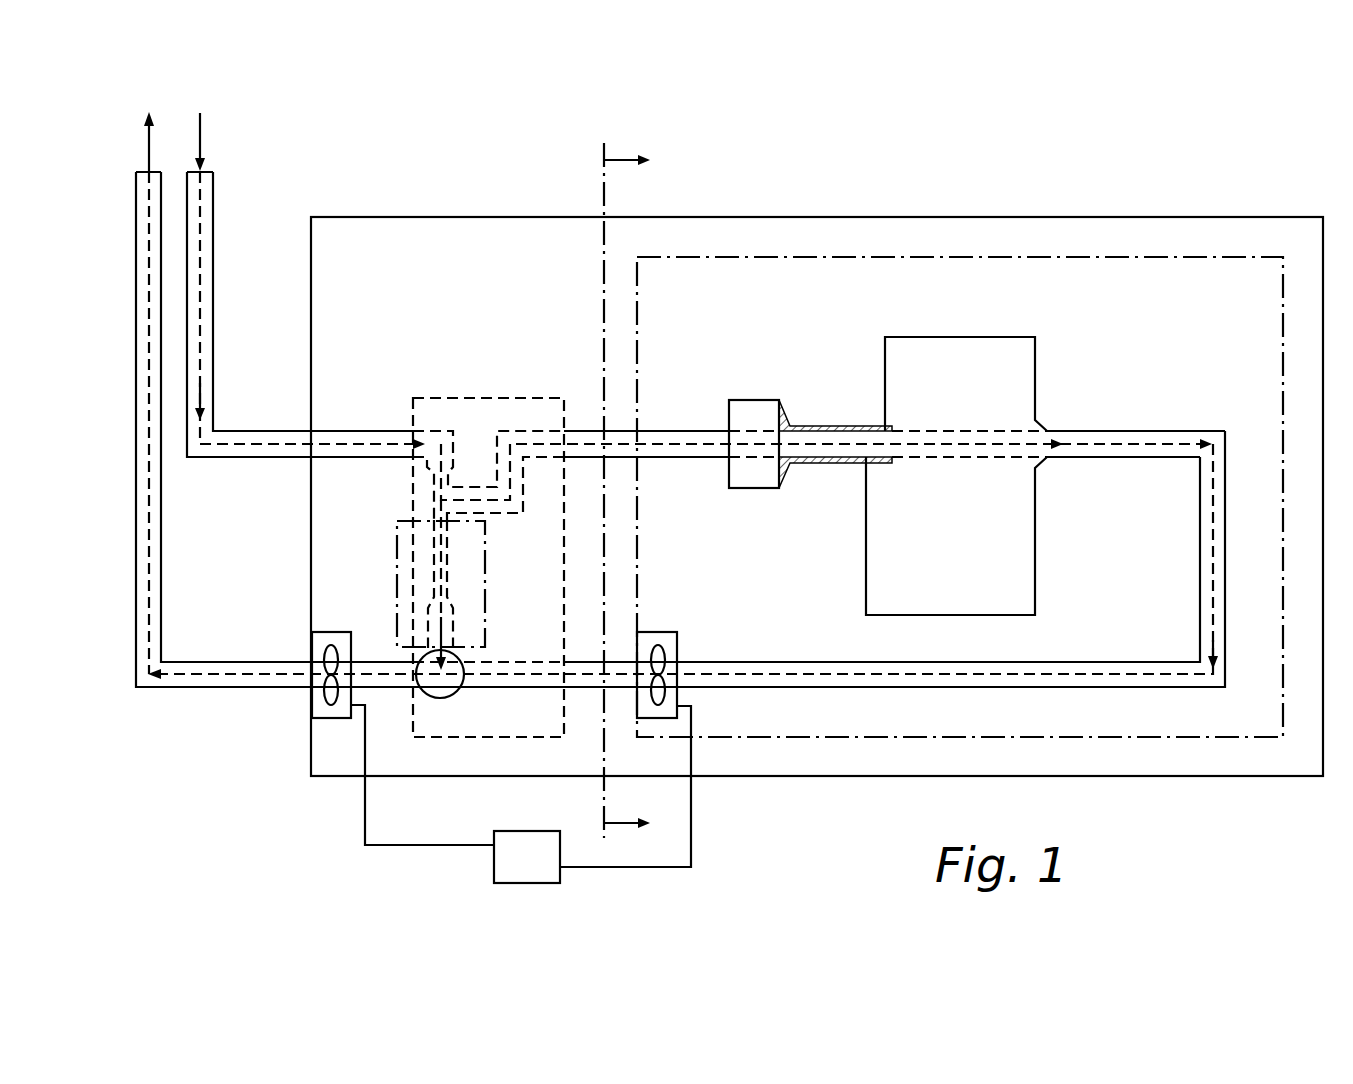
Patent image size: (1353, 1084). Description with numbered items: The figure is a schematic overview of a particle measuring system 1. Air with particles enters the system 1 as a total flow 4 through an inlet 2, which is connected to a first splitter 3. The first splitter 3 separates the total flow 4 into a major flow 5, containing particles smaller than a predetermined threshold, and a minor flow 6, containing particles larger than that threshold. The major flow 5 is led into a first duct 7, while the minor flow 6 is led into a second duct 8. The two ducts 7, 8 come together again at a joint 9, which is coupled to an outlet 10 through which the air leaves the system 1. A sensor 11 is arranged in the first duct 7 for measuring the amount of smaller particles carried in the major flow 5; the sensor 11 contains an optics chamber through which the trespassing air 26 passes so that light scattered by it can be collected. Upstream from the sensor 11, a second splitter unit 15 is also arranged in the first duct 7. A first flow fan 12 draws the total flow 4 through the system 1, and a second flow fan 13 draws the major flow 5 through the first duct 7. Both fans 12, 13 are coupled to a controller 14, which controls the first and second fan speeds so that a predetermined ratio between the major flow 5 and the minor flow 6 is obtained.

The system 1 is at (263, 761).
The inlet 2 is at (200, 134).
The first splitter 3 is at (488, 396).
The total flow 4 is at (201, 386).
The major flow 5 is at (583, 430).
The minor flow 6 is at (440, 613).
The first duct 7 is at (638, 491).
The second duct 8 is at (397, 574).
The joint 9 is at (457, 691).
The outlet 10 is at (148, 151).
The sensor 11 is at (955, 362).
The first flow fan 12 is at (316, 638).
The second flow fan 13 is at (671, 637).
The controller 14 is at (544, 871).
The second splitter unit 15 is at (753, 410).
The trespassing air 26 is at (965, 455).